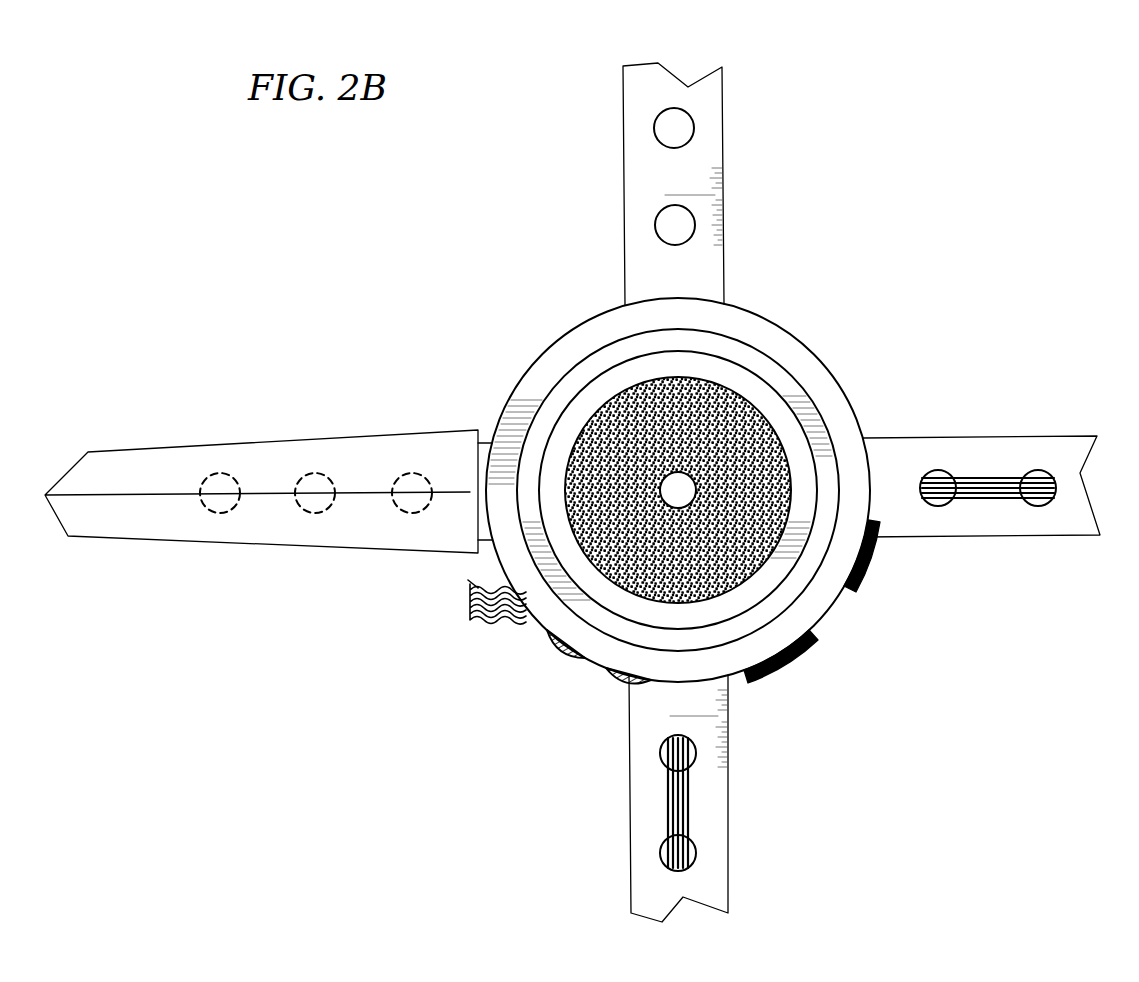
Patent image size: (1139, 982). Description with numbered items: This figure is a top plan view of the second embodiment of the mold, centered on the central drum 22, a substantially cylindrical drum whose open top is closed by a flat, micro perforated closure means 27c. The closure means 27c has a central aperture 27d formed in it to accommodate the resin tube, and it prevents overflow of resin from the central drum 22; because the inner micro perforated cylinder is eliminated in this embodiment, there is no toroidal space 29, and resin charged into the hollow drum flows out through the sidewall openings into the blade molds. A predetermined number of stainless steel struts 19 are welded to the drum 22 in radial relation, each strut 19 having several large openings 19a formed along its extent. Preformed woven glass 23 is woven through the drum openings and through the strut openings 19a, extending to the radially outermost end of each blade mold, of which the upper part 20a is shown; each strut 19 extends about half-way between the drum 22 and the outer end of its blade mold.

The stainless steel strut 19 is at (665, 284).
The strut openings 19a is at (686, 122).
The upper part of blade mold 20a is at (358, 448).
The central drum 22 is at (773, 324).
The preformed woven glass 23 is at (990, 480).
The micro perforated closure means 27c is at (632, 440).
The central aperture 27d is at (664, 473).
The toroidal space 29 is at (773, 407).